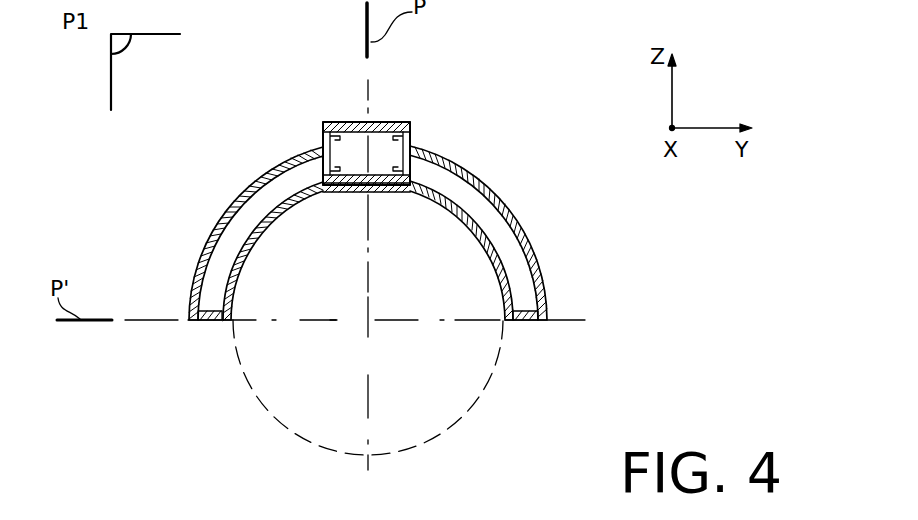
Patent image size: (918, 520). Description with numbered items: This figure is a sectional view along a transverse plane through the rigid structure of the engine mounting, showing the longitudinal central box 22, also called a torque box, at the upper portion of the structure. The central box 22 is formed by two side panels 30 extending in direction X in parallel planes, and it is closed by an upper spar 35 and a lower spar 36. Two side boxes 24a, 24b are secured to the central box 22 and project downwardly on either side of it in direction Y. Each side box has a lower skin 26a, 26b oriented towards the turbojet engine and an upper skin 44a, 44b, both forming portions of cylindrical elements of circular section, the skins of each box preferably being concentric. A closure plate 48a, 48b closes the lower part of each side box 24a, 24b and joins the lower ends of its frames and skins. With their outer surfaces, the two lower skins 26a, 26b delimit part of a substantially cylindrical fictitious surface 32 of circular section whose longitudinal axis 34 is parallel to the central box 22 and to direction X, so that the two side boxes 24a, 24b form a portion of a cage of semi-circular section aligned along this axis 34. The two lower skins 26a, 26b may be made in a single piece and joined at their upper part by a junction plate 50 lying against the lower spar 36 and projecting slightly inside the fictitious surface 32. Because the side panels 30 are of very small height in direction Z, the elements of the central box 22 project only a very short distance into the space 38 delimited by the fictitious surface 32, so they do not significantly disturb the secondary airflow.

The longitudinal central box 22 is at (387, 151).
The side box 24a is at (516, 210).
The side box 24b is at (252, 175).
The lower skin 26a is at (420, 226).
The lower skin 26b is at (235, 290).
The side panel 30 is at (357, 124).
The fictitious cylindrical surface 32 is at (497, 362).
The longitudinal axis 34 is at (372, 328).
The upper spar 35 is at (368, 138).
The lower spar 36 is at (425, 178).
The space 38 is at (333, 386).
The upper skin 44a is at (537, 262).
The upper skin 44b is at (204, 245).
The closure plate 48a is at (527, 321).
The closure plate 48b is at (207, 322).
The junction plate 50 is at (342, 190).